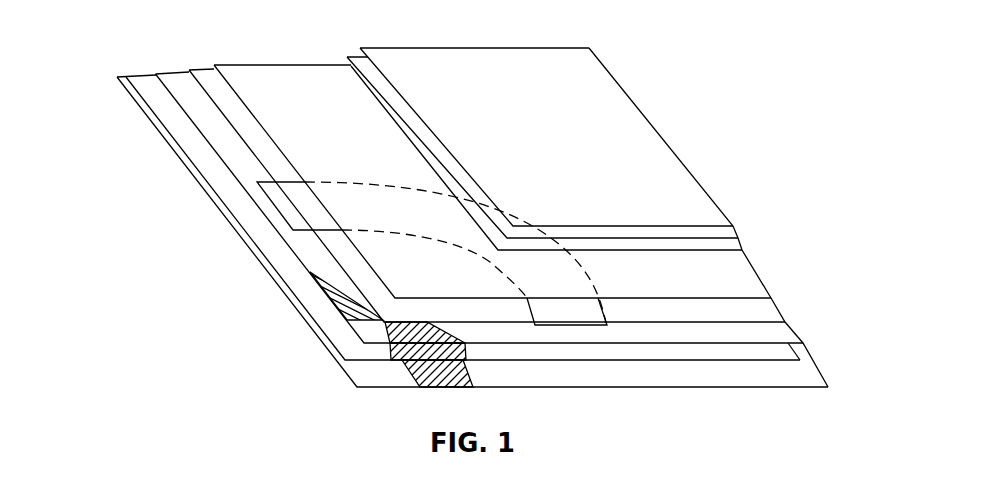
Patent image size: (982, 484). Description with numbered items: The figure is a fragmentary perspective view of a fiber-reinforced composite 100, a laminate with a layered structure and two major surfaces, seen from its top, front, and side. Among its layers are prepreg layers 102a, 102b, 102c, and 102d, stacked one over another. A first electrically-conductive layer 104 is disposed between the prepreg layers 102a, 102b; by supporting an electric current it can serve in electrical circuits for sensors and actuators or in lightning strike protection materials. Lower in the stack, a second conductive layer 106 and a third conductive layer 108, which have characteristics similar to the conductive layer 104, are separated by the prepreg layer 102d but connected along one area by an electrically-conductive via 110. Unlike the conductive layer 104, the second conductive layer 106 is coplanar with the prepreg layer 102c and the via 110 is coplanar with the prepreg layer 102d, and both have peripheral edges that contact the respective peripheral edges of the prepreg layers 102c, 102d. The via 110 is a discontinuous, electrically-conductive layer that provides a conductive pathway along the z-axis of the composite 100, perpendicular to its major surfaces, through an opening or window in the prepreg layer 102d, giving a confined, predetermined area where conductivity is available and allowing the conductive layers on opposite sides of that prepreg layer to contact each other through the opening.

The fiber-reinforced composite 100 is at (661, 26).
The prepreg layer 102a is at (287, 82).
The prepreg layer 102b is at (203, 77).
The prepreg layer 102c is at (168, 78).
The prepreg layer 102d is at (137, 82).
The first electrically-conductive layer 104 is at (590, 320).
The second conductive layer 106 is at (361, 314).
The third conductive layer 108 is at (433, 384).
The electrically-conductive via 110 is at (447, 350).